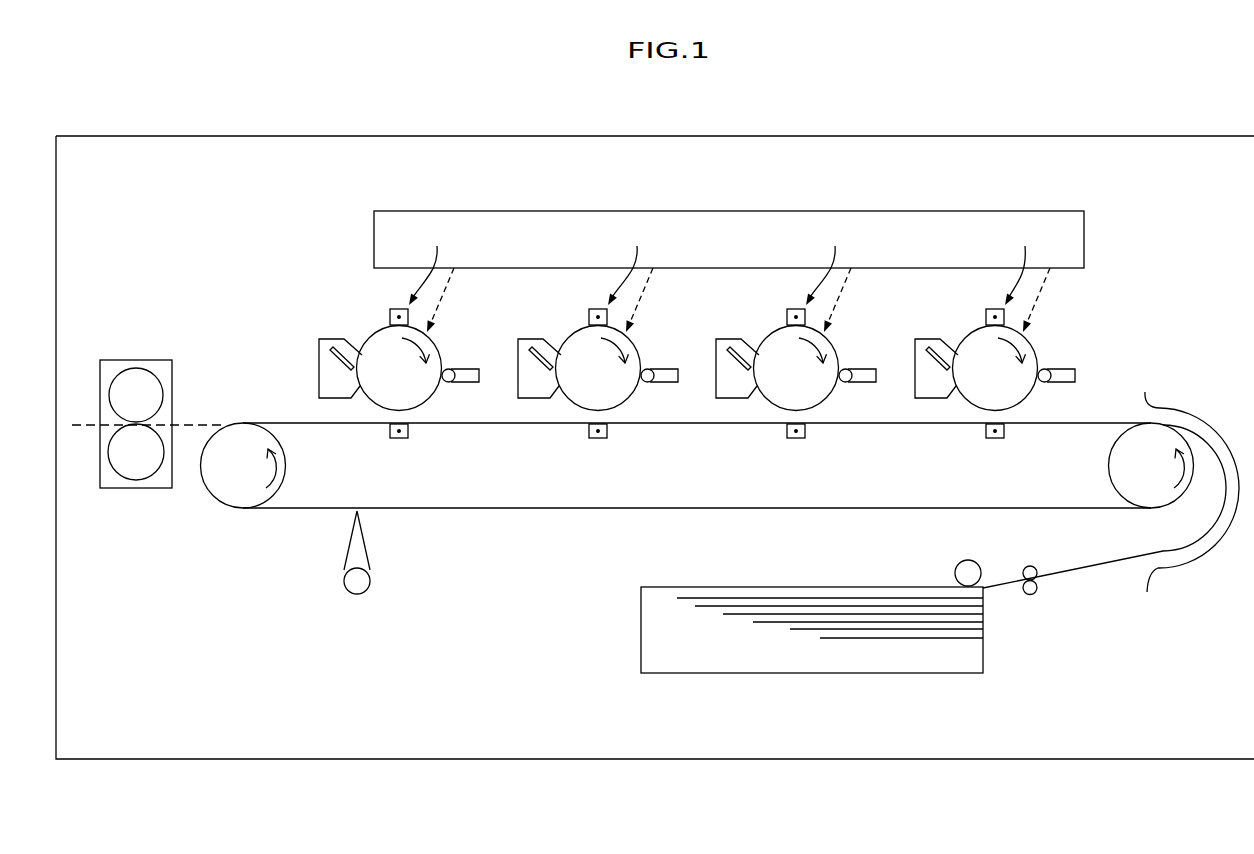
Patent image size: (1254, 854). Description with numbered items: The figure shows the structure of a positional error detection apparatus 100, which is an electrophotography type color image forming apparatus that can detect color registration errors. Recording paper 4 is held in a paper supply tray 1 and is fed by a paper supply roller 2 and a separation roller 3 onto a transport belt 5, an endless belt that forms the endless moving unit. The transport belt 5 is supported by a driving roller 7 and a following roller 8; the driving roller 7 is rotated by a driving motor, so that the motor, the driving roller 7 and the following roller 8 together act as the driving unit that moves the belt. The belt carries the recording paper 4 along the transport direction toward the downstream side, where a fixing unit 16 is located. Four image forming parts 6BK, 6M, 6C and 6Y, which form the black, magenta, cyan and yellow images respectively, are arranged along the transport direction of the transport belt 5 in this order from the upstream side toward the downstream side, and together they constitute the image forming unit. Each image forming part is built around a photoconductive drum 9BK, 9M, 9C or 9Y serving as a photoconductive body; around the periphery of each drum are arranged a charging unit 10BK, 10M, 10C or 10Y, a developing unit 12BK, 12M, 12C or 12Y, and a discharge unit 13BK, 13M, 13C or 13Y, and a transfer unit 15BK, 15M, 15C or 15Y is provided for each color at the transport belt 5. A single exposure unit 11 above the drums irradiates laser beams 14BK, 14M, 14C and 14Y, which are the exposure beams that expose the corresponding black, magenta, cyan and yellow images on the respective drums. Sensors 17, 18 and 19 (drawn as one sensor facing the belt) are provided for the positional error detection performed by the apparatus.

The positional error detection apparatus 100 is at (1027, 136).
The paper supply tray 1 is at (795, 674).
The paper supply roller 2 is at (955, 578).
The separation roller 3 is at (1033, 595).
The recording paper 4 is at (856, 586).
The transport belt 5 is at (646, 509).
The image forming part 6Y is at (428, 264).
The image forming part 6C is at (626, 264).
The image forming part 6M is at (827, 264).
The image forming part 6BK is at (1021, 264).
The driving roller 7 is at (218, 506).
The following roller 8 is at (1110, 452).
The photoconductive drum 9Y is at (411, 390).
The photoconductive drum 9C is at (611, 390).
The photoconductive drum 9M is at (811, 390).
The photoconductive drum 9BK is at (1017, 390).
The charging unit 10Y is at (385, 301).
The charging unit 10C is at (581, 301).
The charging unit 10M is at (779, 301).
The charging unit 10BK is at (974, 301).
The exposure unit 11 is at (724, 211).
The developing unit 12Y is at (463, 357).
The developing unit 12C is at (664, 357).
The developing unit 12M is at (858, 357).
The developing unit 12BK is at (1067, 357).
The discharge unit 13Y is at (322, 352).
The discharge unit 13C is at (524, 352).
The discharge unit 13M is at (720, 352).
The discharge unit 13BK is at (915, 352).
The laser beam 14Y is at (454, 287).
The laser beam 14C is at (652, 287).
The laser beam 14M is at (853, 287).
The laser beam 14BK is at (1051, 287).
The transfer unit 15Y is at (405, 451).
The transfer unit 15C is at (602, 451).
The transfer unit 15M is at (799, 451).
The transfer unit 15BK is at (1004, 451).
The fixing unit 16 is at (128, 369).
The sensor 17 is at (428, 576).
The sensor 18 is at (357, 552).
The sensor 19 is at (358, 594).